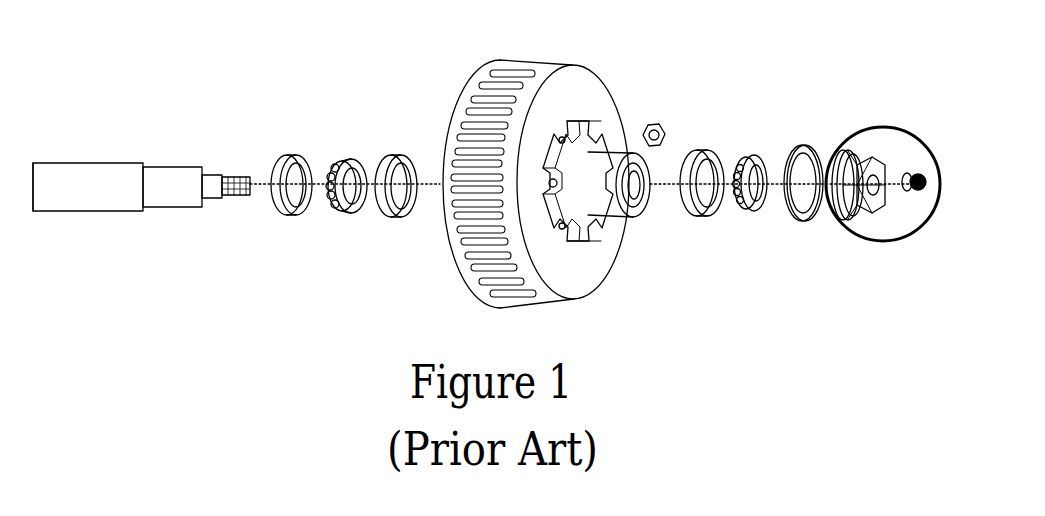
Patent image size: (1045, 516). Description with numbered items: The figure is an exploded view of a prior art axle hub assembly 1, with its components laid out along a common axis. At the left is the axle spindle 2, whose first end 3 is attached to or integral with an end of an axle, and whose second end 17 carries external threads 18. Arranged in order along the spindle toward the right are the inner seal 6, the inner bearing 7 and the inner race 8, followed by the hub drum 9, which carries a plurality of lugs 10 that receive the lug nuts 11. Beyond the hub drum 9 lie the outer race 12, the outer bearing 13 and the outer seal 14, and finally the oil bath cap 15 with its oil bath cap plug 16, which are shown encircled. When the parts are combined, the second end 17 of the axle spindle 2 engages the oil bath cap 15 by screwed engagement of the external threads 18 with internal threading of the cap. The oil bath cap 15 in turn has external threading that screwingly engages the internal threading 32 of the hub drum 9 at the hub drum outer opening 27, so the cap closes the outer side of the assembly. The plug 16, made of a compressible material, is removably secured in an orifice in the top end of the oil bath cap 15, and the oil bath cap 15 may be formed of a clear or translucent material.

The axle hub assembly 1 is at (329, 74).
The axle spindle 2 is at (92, 170).
The first end 3 is at (37, 163).
The inner seal 6 is at (287, 160).
The inner bearing 7 is at (343, 163).
The inner race 8 is at (393, 157).
The hub drum 9 is at (547, 85).
The lugs 10 is at (610, 123).
The lug nuts 11 is at (654, 122).
The outer race 12 is at (694, 154).
The outer bearing 13 is at (745, 158).
The outer seal 14 is at (803, 148).
The oil bath cap 15 is at (872, 160).
The oil bath cap plug 16 is at (919, 172).
The second end 17 is at (248, 197).
The external threads 18 is at (235, 178).
The outer opening 27 is at (644, 207).
The internal threading 32 is at (648, 176).